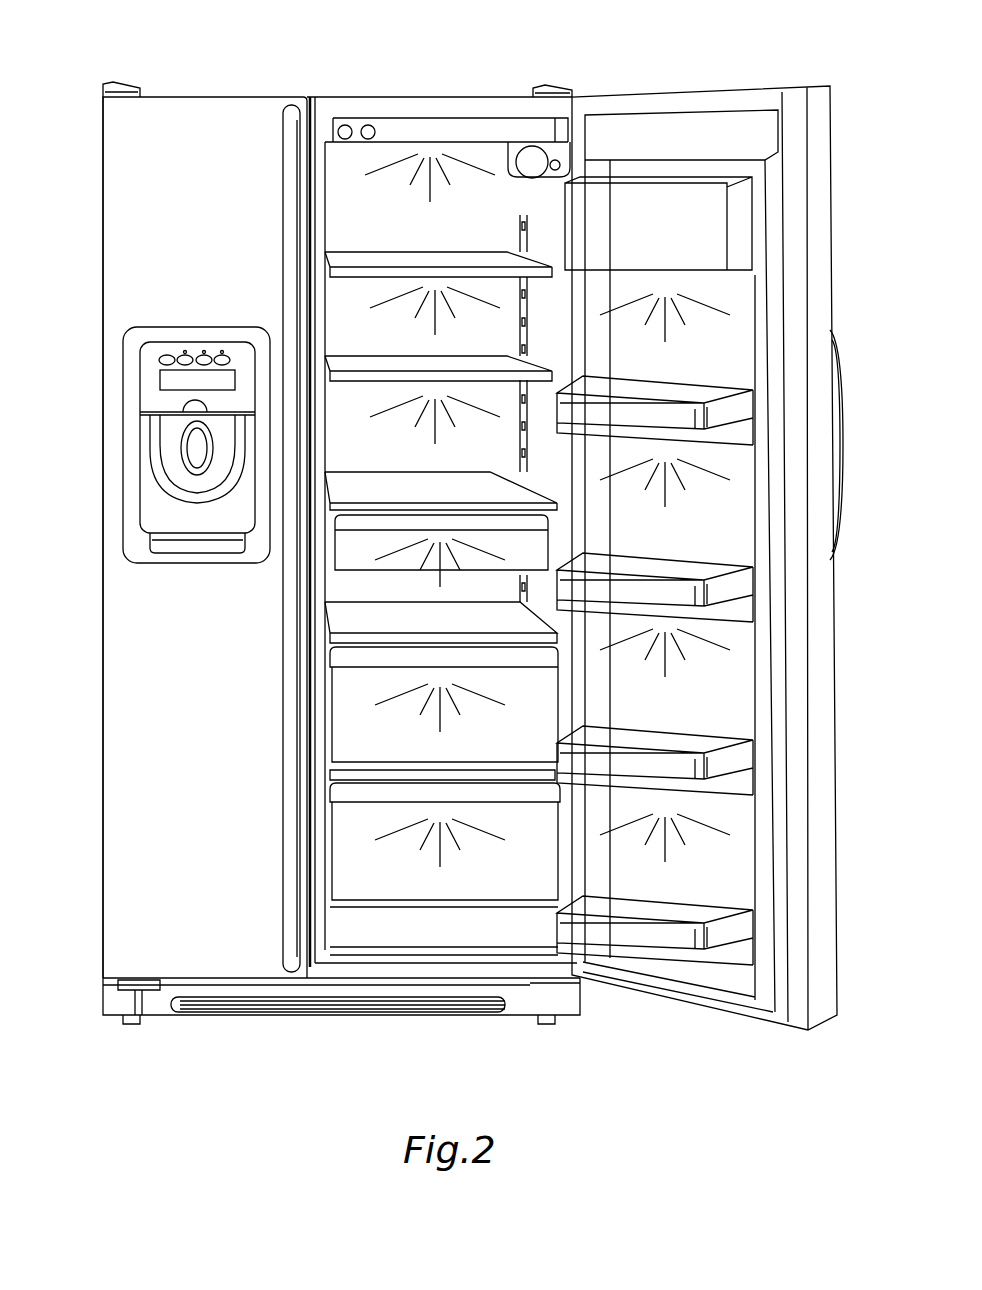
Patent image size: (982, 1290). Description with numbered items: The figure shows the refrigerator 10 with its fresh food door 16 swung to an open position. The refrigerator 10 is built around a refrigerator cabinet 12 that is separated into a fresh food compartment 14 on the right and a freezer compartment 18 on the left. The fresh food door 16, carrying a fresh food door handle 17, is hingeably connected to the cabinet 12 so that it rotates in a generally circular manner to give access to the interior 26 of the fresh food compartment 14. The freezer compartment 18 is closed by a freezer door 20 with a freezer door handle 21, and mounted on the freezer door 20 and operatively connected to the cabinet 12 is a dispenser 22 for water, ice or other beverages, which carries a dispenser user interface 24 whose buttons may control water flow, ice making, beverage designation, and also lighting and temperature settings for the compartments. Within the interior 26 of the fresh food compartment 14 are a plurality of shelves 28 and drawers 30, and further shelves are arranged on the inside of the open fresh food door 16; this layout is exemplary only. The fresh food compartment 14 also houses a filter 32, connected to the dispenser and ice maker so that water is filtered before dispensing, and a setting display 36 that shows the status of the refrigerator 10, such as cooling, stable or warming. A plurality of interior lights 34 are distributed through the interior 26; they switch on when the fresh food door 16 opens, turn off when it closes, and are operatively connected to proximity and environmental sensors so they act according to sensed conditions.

The refrigerator 10 is at (565, 29).
The refrigerator cabinet 12 is at (386, 80).
The fresh food compartment 14 is at (541, 80).
The fresh food door 16 is at (708, 92).
The fresh food door handle 17 is at (836, 362).
The freezer compartment 18 is at (96, 176).
The freezer door 20 is at (152, 627).
The freezer door handle 21 is at (297, 203).
The dispenser 22 is at (133, 345).
The dispenser user interface 24 is at (212, 355).
The interior of the fresh food compartment 26 is at (483, 155).
The shelves 28 is at (400, 270).
The drawers 30 is at (357, 566).
The filter 32 is at (532, 157).
The interior lights 34 is at (412, 168).
The setting display 36 is at (340, 124).